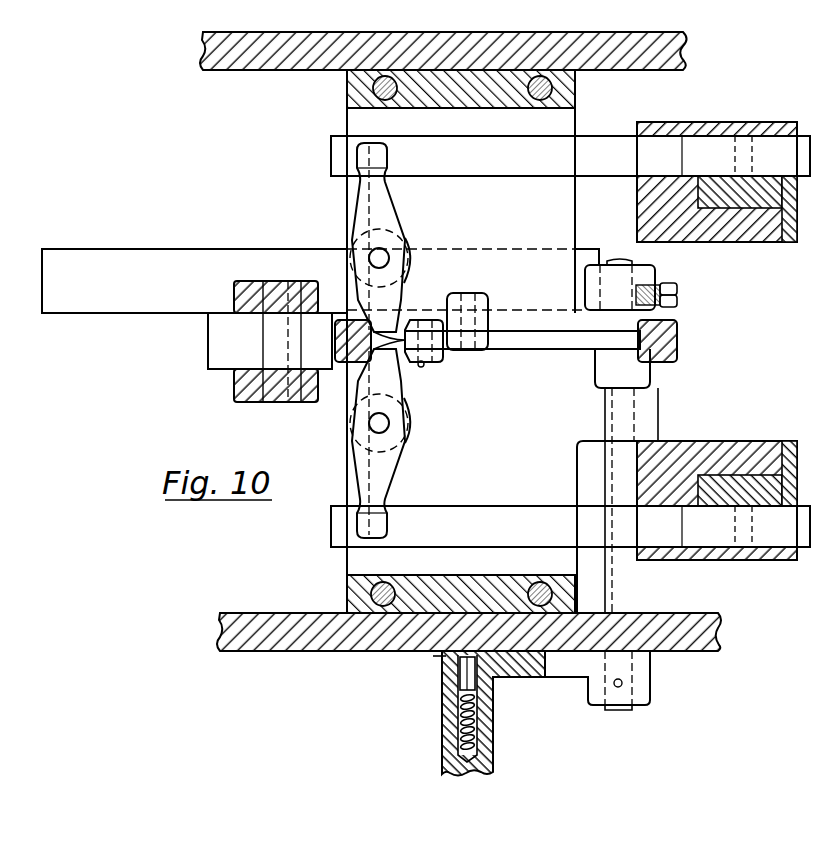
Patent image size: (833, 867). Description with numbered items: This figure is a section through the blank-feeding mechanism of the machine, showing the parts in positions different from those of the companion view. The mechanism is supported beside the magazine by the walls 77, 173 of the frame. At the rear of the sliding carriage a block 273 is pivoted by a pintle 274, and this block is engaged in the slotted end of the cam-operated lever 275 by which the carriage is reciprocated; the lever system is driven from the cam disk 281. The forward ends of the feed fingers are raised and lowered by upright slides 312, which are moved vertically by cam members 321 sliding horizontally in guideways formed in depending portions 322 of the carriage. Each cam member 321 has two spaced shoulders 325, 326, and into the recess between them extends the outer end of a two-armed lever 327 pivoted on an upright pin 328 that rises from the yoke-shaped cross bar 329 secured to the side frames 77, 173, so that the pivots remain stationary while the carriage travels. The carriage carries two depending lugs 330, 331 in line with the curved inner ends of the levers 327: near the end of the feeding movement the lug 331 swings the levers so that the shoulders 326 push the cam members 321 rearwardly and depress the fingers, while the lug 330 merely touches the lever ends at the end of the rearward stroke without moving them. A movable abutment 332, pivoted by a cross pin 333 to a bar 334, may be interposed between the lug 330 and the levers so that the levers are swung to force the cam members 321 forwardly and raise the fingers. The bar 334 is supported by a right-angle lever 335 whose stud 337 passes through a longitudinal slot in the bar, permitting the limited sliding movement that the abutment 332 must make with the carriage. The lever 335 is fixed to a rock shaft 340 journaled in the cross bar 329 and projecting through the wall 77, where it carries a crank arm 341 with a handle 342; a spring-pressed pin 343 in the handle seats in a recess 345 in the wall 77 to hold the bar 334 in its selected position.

The wall 77 is at (255, 641).
The wall 173 is at (318, 70).
The block 273 is at (315, 339).
The pintle 274 is at (275, 283).
The cam-operated lever 275 is at (242, 401).
The cam disk 281 is at (148, 240).
The upright slide 312 is at (771, 235).
The cam member 321 is at (606, 140).
The depending portion 322 is at (694, 243).
The shoulder 325 is at (577, 156).
The shoulder 326 is at (366, 148).
The two-armed lever 327 is at (388, 203).
The upright pin 328 is at (372, 258).
The cross bar 329 is at (570, 221).
The depending lug 330 is at (673, 330).
The depending lug 331 is at (340, 363).
The movable abutment 332 is at (442, 364).
The cross pin 333 is at (424, 368).
The bar 334 is at (531, 347).
The right-angle lever 335 is at (553, 304).
The stud 337 is at (463, 294).
The rock shaft 340 is at (630, 594).
The crank arm 341 is at (561, 676).
The handle 342 is at (446, 720).
The spring-pressed pin 343 is at (465, 677).
The recess 345 is at (438, 656).